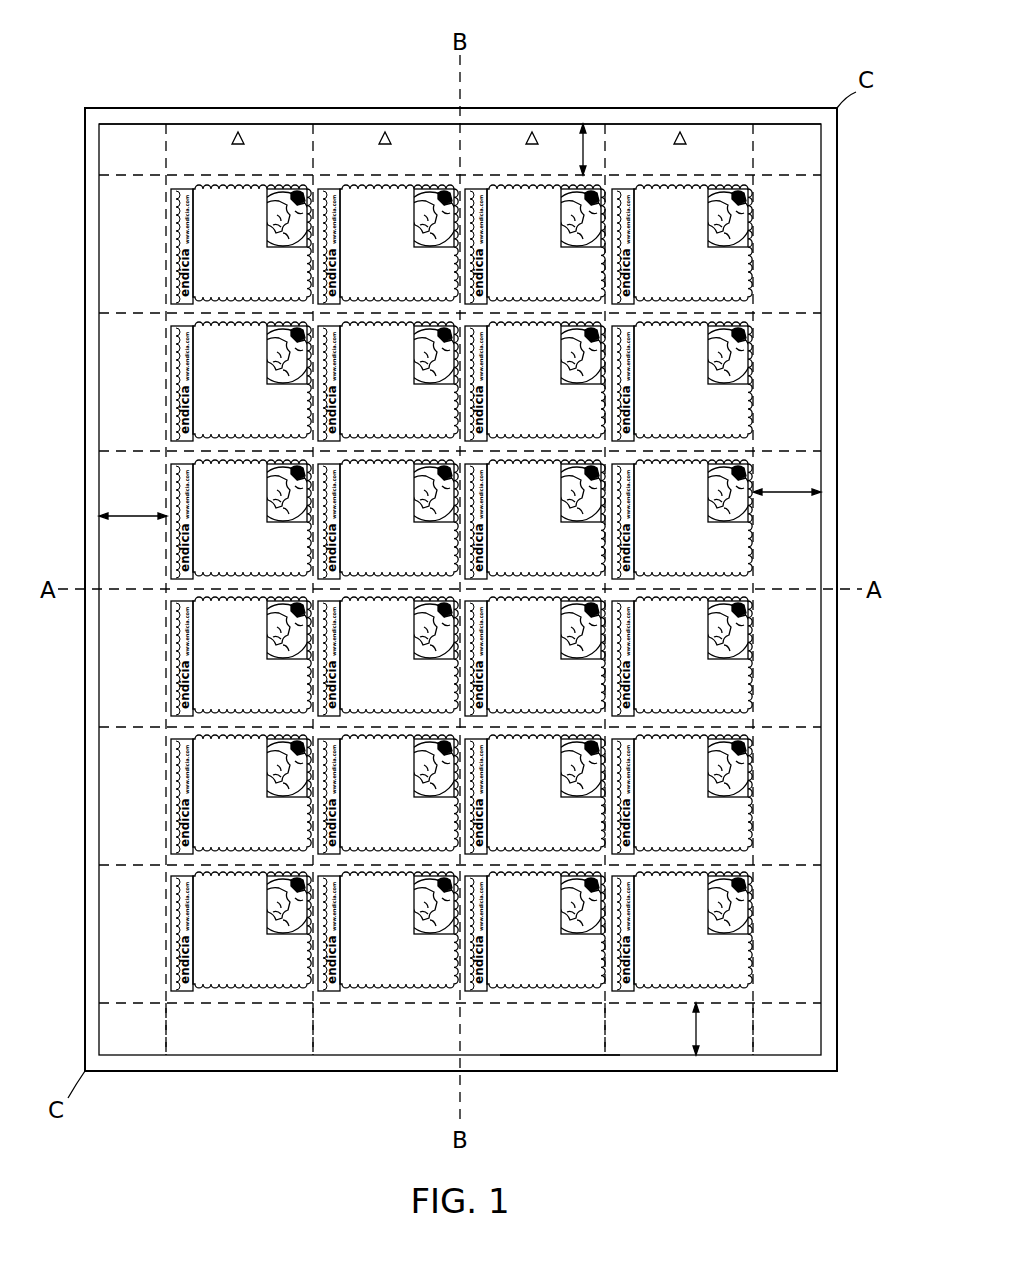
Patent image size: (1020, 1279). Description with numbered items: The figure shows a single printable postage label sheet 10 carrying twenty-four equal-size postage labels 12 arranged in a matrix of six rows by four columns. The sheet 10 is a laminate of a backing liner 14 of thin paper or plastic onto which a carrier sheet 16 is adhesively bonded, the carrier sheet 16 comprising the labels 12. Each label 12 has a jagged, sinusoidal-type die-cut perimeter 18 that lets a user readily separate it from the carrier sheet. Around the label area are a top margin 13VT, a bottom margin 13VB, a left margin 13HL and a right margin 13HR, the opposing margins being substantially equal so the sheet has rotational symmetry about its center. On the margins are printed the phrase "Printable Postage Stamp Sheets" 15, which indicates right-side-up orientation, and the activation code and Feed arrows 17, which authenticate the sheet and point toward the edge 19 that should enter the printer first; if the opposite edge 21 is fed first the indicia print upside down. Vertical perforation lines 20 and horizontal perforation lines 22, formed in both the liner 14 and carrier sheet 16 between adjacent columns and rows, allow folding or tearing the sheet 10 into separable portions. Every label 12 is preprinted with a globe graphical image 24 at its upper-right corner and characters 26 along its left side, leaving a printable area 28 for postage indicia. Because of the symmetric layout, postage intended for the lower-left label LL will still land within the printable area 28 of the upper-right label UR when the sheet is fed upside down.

The printable postage label sheet 10 is at (766, 50).
The postage label 12 is at (463, 525).
The top margin 13VT is at (582, 138).
The left margin 13HL is at (149, 514).
The right margin 13HR is at (770, 493).
The bottom margin 13VB is at (694, 1051).
The backing liner 14 is at (147, 113).
The phrase "Printable Postage Stamp Sheets" 15 is at (363, 1058).
The carrier sheet 16 is at (338, 133).
The Feed arrows / activation code 17 is at (238, 130).
The die-cut perimeter 18 is at (171, 256).
The edge 19 is at (272, 123).
The vertical perforation lines 20 is at (166, 1046).
The opposite edge 21 is at (564, 1058).
The horizontal perforation lines 22 is at (148, 175).
The graphical image 24 is at (740, 355).
The characters and designs 26 is at (625, 680).
The printable area 28 is at (658, 200).
The upper right hand corner postage label UR is at (700, 200).
The lower left hand corner postage label LL is at (176, 935).